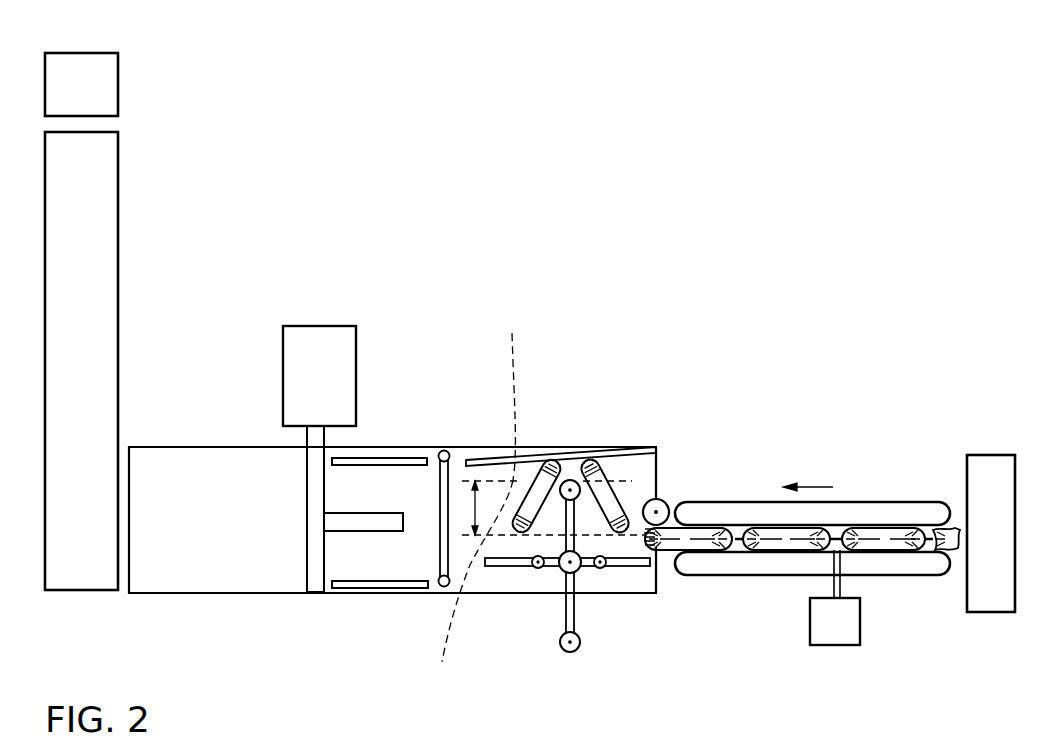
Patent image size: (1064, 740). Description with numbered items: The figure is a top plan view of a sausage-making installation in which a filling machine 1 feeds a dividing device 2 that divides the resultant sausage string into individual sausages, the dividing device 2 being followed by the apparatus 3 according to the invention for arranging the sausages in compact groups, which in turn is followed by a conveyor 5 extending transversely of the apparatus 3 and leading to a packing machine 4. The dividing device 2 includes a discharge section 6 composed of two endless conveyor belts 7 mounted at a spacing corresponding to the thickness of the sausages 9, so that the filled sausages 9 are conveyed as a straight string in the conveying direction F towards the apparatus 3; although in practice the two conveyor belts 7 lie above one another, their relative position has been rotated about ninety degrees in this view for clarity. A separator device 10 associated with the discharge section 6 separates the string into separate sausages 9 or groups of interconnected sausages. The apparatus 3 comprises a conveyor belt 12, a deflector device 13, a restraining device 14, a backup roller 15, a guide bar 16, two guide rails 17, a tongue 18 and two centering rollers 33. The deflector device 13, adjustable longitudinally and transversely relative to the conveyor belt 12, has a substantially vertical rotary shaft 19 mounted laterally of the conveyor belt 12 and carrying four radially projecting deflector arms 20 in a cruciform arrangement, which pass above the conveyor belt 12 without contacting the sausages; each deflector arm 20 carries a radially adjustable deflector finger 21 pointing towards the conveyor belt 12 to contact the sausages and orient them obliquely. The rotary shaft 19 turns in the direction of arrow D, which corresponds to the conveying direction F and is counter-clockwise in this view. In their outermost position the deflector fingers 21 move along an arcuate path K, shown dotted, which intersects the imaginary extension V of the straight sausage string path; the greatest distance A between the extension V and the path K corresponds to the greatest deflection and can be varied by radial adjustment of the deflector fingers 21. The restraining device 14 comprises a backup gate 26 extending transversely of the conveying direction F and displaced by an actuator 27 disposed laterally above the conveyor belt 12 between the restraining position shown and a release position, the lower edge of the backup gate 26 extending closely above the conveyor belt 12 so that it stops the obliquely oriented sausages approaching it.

The filling machine 1 is at (1003, 500).
The dividing device 2 is at (832, 452).
The apparatus 3 is at (546, 324).
The packing machine 4 is at (93, 100).
The conveyor 5 is at (87, 217).
The discharge section 6 is at (909, 487).
The conveyor belts 7 is at (792, 565).
The sausages 9 is at (897, 542).
The separator device 10 is at (842, 620).
The conveyor belt 12 is at (193, 493).
The deflector device 13 is at (521, 616).
The restraining device 14 is at (326, 298).
The backup roller 15 is at (668, 504).
The guide bar 16 is at (536, 457).
The guide rails 17 is at (397, 460).
The tongue 18 is at (360, 521).
The rotary shaft 19 is at (566, 574).
The deflector arms 20 is at (576, 605).
The deflector fingers 21 is at (592, 462).
The backup gate 26 is at (317, 546).
The actuator 27 is at (332, 377).
The centering rollers 33 is at (448, 450).
The distance A is at (553, 508).
The direction of rotation D is at (596, 532).
The conveying direction F is at (818, 487).
The arcuate path K is at (513, 391).
The imaginary extension V is at (466, 586).